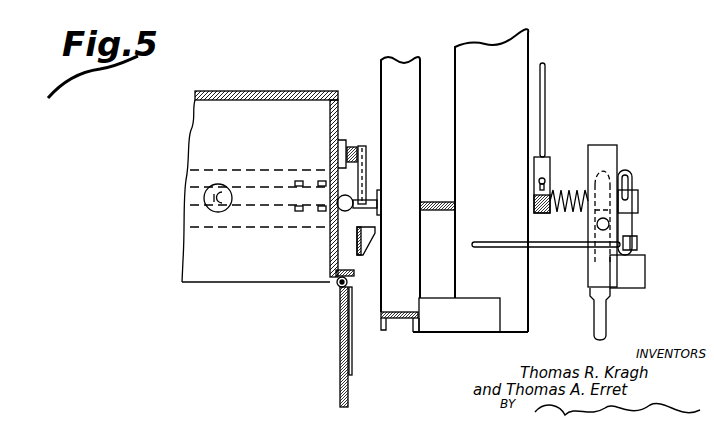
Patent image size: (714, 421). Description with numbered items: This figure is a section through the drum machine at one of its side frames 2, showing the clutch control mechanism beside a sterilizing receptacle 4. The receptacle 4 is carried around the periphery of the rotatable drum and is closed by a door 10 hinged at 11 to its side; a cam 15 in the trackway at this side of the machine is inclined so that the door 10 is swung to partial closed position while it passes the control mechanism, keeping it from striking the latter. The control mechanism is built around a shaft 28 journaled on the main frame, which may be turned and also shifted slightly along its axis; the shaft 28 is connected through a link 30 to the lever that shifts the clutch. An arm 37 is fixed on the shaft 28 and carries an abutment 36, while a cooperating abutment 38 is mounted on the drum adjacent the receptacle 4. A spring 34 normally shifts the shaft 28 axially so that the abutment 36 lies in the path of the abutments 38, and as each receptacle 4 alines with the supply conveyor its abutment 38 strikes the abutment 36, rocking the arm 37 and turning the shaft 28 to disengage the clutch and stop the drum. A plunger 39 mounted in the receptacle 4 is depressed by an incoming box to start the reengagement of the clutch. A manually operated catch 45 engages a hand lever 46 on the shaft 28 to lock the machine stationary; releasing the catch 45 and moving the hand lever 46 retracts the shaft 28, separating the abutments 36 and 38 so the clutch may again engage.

The side frame 2 is at (398, 318).
The sterilizing receptacle 4 is at (270, 91).
The door 10 is at (340, 354).
The hinge 11 is at (337, 286).
The cam 15 is at (372, 237).
The shaft 28 is at (444, 200).
The link 30 is at (544, 96).
The spring 34 is at (583, 166).
The abutment 36 is at (352, 146).
The arm 37 is at (362, 157).
The cooperating abutment 38 is at (337, 142).
The plunger 39 is at (218, 212).
The catch 45 is at (628, 122).
The hand lever 46 is at (627, 181).